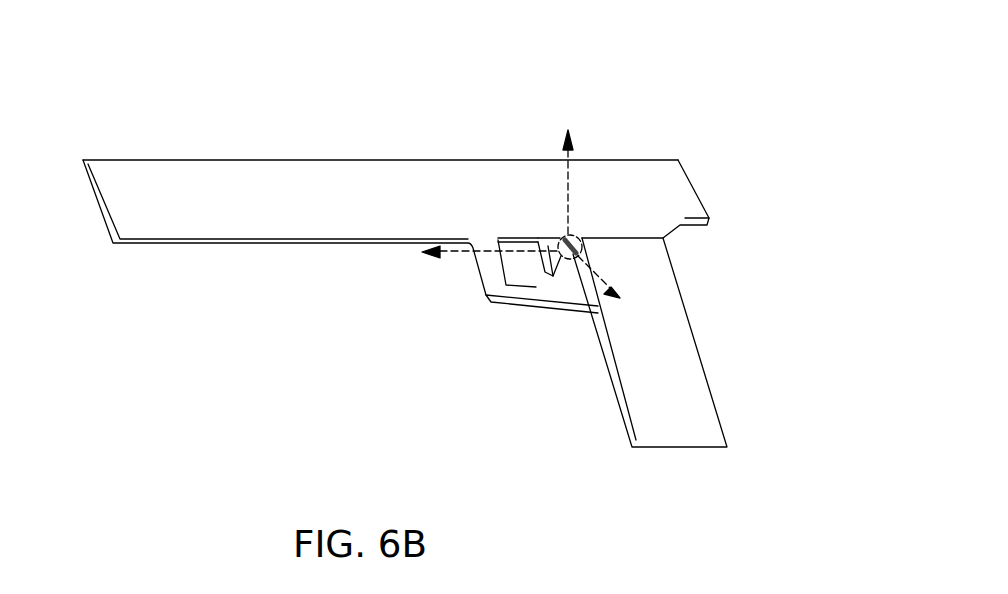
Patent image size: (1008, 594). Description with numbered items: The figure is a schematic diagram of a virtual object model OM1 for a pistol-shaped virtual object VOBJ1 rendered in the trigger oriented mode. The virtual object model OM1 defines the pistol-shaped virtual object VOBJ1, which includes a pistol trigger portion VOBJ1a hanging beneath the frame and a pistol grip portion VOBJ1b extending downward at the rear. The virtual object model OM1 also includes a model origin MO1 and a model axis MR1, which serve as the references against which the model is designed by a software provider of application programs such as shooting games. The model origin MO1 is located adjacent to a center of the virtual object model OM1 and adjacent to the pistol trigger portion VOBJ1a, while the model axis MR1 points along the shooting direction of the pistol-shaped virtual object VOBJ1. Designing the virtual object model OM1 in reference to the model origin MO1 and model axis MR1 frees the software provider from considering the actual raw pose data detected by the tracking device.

The virtual object model OM1 is at (767, 131).
The pistol-shaped virtual object VOBJ1 is at (443, 159).
The pistol trigger portion VOBJ1a is at (540, 270).
The pistol grip portion VOBJ1b is at (694, 332).
The model origin MO1 is at (575, 230).
The model axis MR1 is at (463, 253).